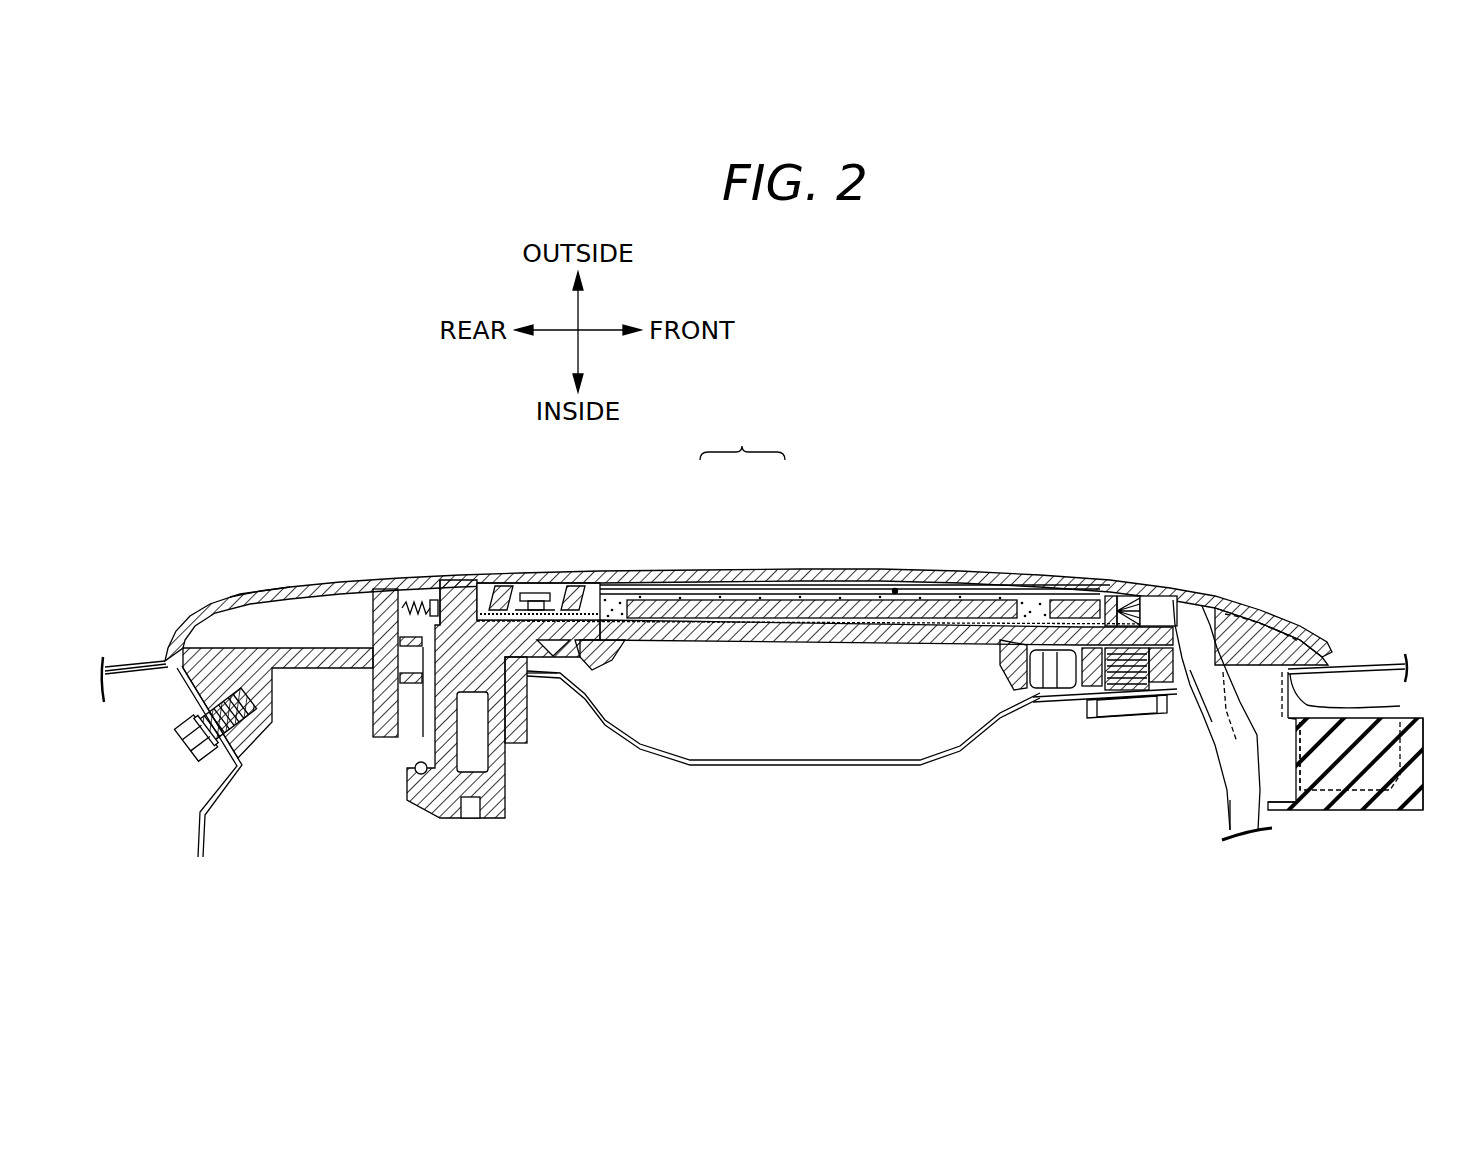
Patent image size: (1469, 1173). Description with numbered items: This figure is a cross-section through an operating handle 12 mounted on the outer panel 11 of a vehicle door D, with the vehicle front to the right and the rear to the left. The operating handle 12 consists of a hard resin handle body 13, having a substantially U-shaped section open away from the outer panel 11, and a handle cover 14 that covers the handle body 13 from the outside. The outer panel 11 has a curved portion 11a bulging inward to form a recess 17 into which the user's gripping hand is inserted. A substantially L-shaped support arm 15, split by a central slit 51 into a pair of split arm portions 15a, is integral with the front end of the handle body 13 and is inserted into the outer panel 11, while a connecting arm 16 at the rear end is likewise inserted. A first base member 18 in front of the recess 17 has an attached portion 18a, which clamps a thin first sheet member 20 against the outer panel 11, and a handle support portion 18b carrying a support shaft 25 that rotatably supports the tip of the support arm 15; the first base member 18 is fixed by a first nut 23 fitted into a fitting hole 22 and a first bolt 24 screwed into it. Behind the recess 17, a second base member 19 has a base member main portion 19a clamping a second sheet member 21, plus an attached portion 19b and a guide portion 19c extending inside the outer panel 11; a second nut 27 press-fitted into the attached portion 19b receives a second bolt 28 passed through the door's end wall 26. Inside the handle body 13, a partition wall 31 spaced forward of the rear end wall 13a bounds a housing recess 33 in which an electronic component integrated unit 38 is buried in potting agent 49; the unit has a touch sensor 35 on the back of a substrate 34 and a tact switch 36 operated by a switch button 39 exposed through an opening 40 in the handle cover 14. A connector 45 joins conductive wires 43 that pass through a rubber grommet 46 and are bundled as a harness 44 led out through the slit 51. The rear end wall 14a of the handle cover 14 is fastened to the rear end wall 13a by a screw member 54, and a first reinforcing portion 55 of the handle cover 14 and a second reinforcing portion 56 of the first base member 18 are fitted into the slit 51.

The outer panel 11 is at (1343, 662).
The curved portion 11a is at (855, 766).
The operating handle 12 is at (742, 437).
The handle body 13 is at (703, 590).
The rear end wall 13a is at (422, 578).
The handle cover 14 is at (782, 575).
The rear end wall 14a is at (402, 637).
The support arm 15 is at (1312, 688).
The split arm portion 15a is at (1279, 765).
The connecting arm 16 is at (507, 800).
The recess 17 is at (782, 758).
The first base member 18 is at (1318, 818).
The attached portion 18a is at (1067, 700).
The handle support portion 18b is at (1414, 812).
The second base member 19 is at (190, 602).
The base member main portion 19a is at (263, 586).
The attached portion 19b is at (240, 745).
The guide portion 19c is at (520, 727).
The first sheet member 20 is at (1312, 636).
The second sheet member 21 is at (180, 654).
The fitting hole 22 is at (1113, 710).
The first nut 23 is at (1152, 635).
The first bolt 24 is at (1133, 716).
The support shaft 25 is at (1420, 762).
The end wall 26 is at (165, 697).
The second nut 27 is at (250, 732).
The second bolt 28 is at (195, 757).
The partition wall 31 is at (468, 582).
The housing recess 33 is at (491, 583).
The substrate 34 is at (1030, 600).
The touch sensor 35 is at (838, 600).
The tact switch 36 is at (613, 625).
The electronic component integrated unit 38 is at (895, 590).
The switch button 39 is at (545, 590).
The opening 40 is at (516, 590).
The conductive wire 43 is at (1122, 608).
The harness 44 is at (1228, 828).
The connector 45 is at (1068, 603).
The grommet 46 is at (1111, 598).
The potting agent 49 is at (660, 592).
The slit 51 is at (1200, 714).
The screw member 54 is at (383, 600).
The first reinforcing portion 55 is at (1236, 620).
The second reinforcing portion 56 is at (1322, 702).
The vehicle door D is at (1381, 648).